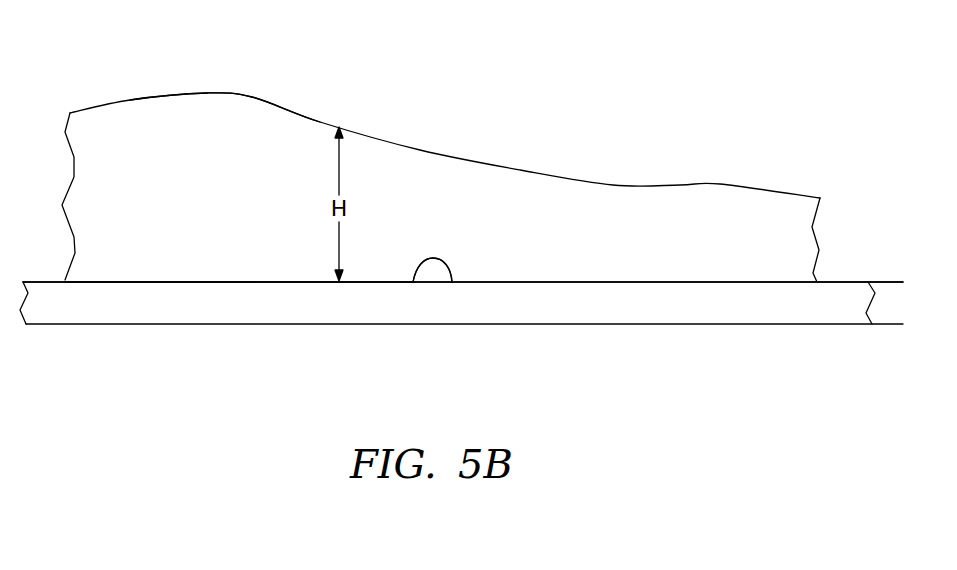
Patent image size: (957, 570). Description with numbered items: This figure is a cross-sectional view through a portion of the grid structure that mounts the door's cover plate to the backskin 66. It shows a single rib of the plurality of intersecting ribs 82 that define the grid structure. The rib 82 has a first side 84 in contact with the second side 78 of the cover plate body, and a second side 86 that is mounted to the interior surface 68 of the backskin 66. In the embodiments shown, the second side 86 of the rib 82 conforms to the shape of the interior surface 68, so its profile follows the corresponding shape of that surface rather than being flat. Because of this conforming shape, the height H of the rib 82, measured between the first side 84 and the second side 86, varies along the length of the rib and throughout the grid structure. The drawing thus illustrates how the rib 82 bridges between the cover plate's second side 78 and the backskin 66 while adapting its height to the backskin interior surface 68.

The ribs 82 is at (668, 242).
The second side of the ribs 86 is at (252, 97).
The first side of the ribs 84 is at (267, 282).
The backskin 66 is at (680, 375).
The interior surface 68 is at (452, 282).
The second side of the cover plate 78 is at (432, 270).